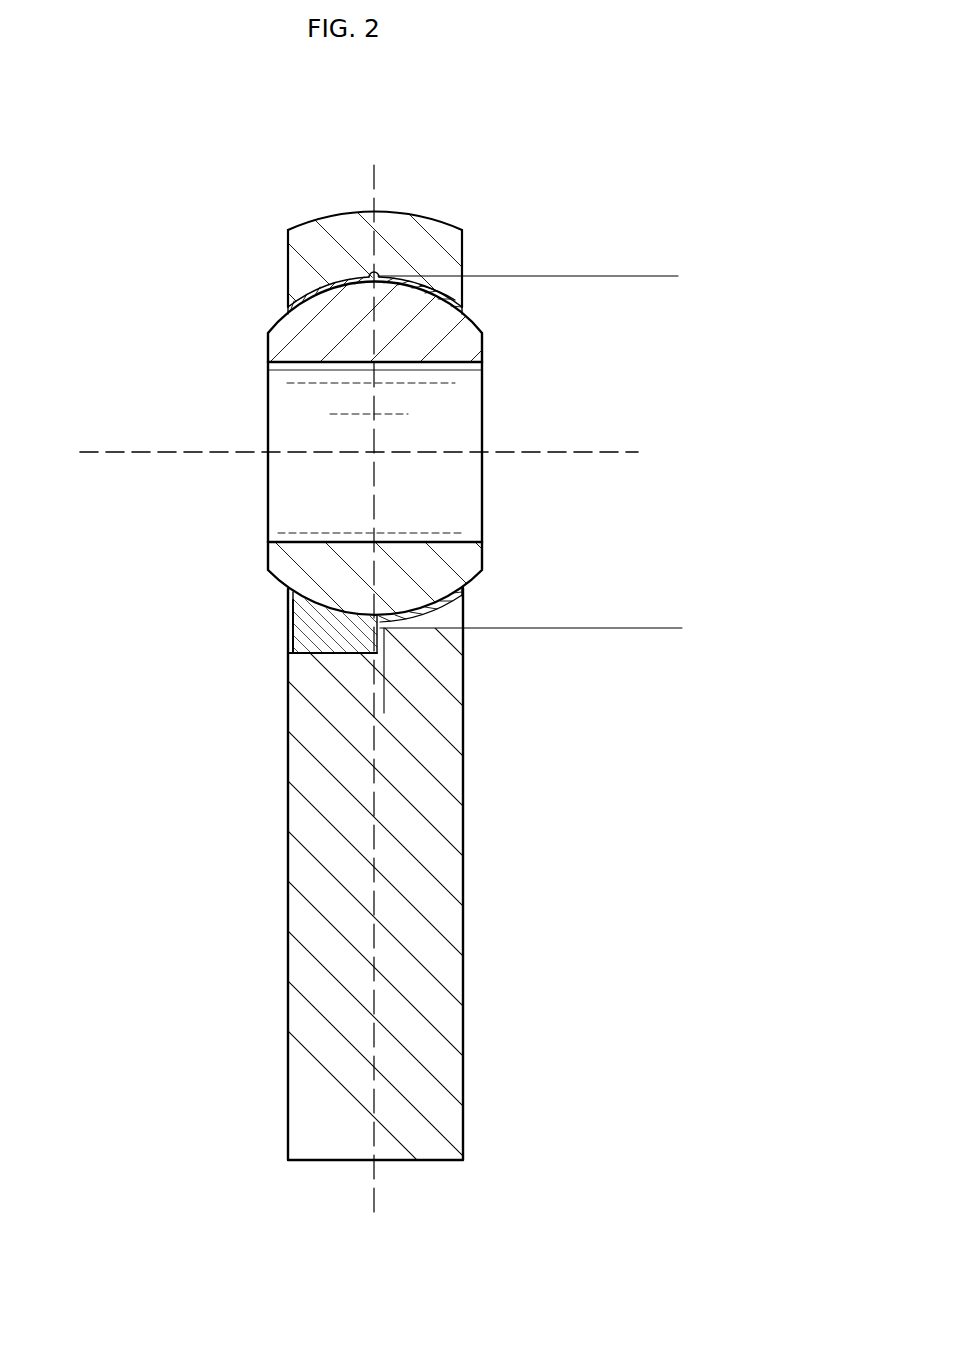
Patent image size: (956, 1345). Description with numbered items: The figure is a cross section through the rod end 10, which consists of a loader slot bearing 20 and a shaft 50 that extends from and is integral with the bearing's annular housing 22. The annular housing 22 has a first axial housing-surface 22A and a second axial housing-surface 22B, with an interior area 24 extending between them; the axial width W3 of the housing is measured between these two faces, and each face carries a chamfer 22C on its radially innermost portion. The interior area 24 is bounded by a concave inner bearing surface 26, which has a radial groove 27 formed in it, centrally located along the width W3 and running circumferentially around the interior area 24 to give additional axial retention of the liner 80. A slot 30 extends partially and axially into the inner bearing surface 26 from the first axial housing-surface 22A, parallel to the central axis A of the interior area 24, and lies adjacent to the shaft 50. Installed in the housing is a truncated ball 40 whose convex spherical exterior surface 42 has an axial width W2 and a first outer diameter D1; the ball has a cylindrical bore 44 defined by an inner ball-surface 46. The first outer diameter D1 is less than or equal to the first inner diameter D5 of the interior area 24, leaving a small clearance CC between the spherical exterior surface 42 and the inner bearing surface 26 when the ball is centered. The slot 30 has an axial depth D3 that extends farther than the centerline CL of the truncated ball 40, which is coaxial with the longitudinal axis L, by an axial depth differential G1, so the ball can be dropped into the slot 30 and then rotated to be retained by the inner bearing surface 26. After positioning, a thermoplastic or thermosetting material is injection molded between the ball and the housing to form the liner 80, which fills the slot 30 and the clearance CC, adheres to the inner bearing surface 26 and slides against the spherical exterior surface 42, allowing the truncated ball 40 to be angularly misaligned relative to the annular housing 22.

The rod end 10 is at (716, 185).
The loader slot bearing 20 is at (763, 210).
The annular housing 22 is at (313, 240).
The first axial housing-surface 22A is at (284, 273).
The second axial housing-surface 22B is at (463, 250).
The chamfer 22C is at (284, 301).
The interior area 24 is at (287, 309).
The inner bearing surface 26 is at (433, 274).
The radial groove 27 is at (367, 264).
The slot 30 is at (287, 632).
The truncated ball 40 is at (407, 474).
The spherical exterior surface 42 is at (480, 322).
The cylindrical bore 44 is at (313, 428).
The inner ball-surface 46 is at (468, 358).
The shaft 50 is at (763, 1169).
The liner 80 is at (310, 626).
The central axis A is at (114, 449).
The clearance CC is at (350, 307).
The centerline CL is at (383, 407).
The first outer diameter D1 is at (374, 615).
The axial depth D3 is at (383, 706).
The first inner diameter D5 is at (656, 220).
The axial depth differential G1 is at (337, 639).
The longitudinal axis L is at (379, 752).
The axial width W2 is at (545, 555).
The axial width W3 is at (288, 248).